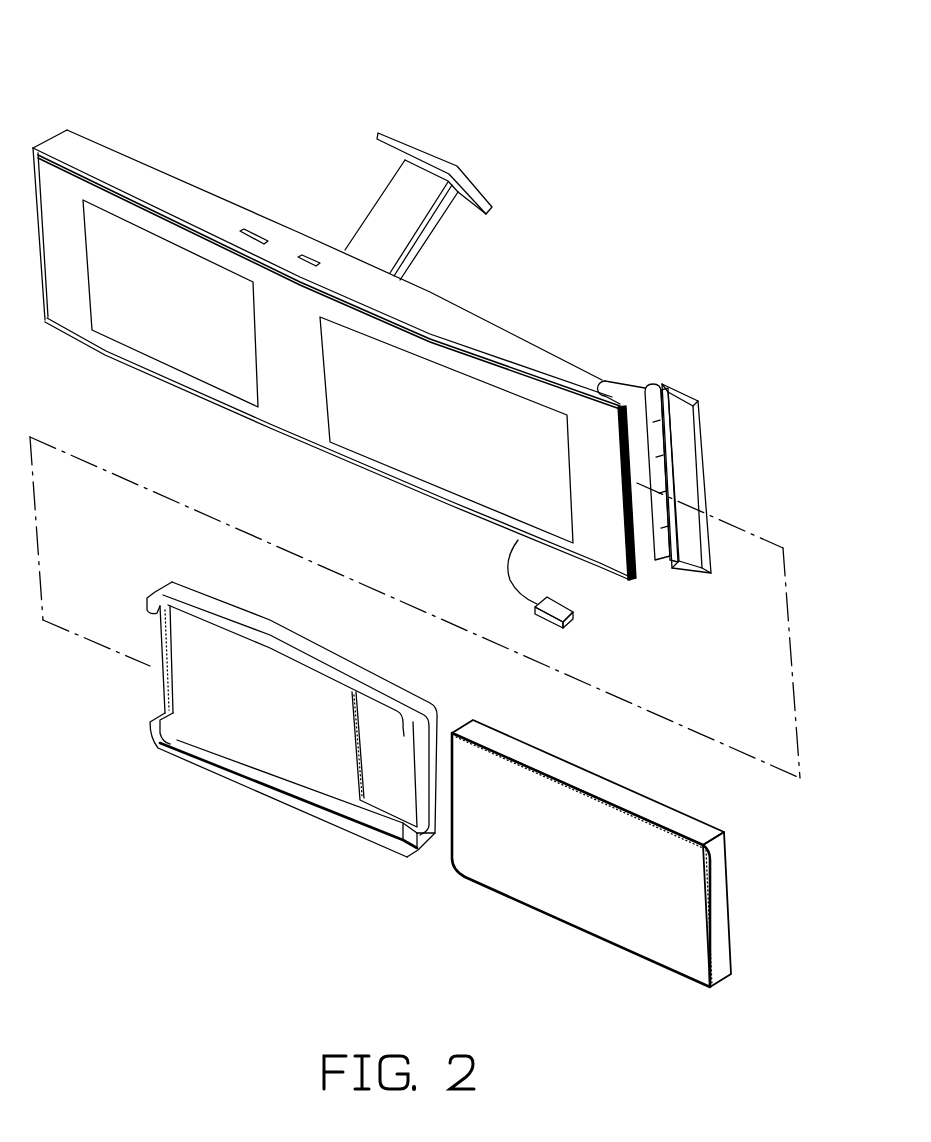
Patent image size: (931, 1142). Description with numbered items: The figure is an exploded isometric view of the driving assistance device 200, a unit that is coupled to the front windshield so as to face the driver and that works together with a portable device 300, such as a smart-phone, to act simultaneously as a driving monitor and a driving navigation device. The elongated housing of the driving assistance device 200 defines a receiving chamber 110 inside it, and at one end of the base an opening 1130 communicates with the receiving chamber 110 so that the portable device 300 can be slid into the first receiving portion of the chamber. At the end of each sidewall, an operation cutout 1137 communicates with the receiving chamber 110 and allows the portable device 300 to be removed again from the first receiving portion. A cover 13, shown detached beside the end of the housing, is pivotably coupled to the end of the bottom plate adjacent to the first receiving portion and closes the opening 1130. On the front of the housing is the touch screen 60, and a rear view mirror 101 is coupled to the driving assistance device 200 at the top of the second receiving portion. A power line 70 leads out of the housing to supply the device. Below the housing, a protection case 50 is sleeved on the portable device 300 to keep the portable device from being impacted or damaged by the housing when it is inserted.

The driving assistance device 200 is at (217, 68).
The receiving chamber 110 is at (635, 410).
The operation cutout 1137 is at (612, 390).
The rear view mirror 101 is at (153, 333).
The touch screen 60 is at (373, 428).
The opening 1130 is at (643, 533).
The cover 13 is at (683, 418).
The power line 70 is at (560, 604).
The protection case 50 is at (288, 806).
The portable device 300 is at (572, 892).